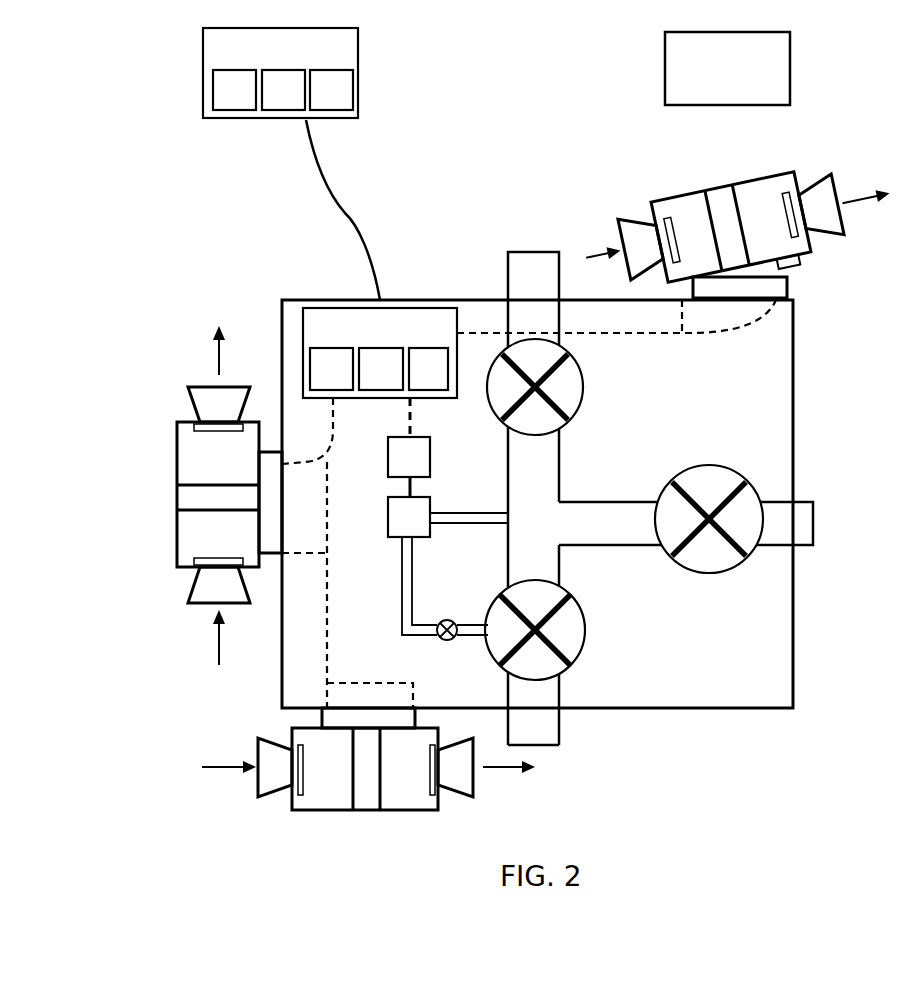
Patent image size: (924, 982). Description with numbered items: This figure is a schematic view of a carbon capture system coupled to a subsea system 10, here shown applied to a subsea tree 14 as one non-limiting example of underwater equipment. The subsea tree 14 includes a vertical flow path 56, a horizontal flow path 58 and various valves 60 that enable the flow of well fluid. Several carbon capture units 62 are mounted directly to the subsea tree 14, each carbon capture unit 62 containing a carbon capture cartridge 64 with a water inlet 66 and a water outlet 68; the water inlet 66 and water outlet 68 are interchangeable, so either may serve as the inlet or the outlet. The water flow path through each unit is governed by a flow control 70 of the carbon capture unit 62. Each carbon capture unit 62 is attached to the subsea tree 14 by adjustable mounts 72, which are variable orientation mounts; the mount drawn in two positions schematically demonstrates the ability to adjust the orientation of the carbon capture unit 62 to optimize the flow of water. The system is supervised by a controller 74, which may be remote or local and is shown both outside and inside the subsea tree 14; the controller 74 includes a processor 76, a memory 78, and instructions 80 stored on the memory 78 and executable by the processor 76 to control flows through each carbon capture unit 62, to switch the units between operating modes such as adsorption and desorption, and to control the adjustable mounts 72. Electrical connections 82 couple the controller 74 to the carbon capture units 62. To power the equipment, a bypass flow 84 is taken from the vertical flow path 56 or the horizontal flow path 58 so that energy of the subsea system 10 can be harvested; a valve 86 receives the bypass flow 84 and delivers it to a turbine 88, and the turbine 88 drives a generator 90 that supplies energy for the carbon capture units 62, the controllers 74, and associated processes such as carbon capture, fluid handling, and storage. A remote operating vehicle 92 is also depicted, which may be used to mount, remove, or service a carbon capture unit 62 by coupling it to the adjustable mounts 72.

The subsea system 10 is at (108, 162).
The subsea tree 14 is at (794, 420).
The vertical flow path 56 is at (530, 252).
The horizontal flow path 58 is at (813, 520).
The valves 60 is at (582, 370).
The carbon capture unit 62 is at (177, 449).
The carbon capture cartridge 64 is at (177, 497).
The water inlet 66 is at (191, 583).
The water outlet 68 is at (200, 386).
The flow control 70 is at (300, 782).
The adjustable mounts 72 is at (805, 276).
The controller 74 is at (203, 52).
The processor 76 is at (230, 110).
The memory 78 is at (280, 110).
The instructions 80 is at (330, 110).
The electrical connections 82 is at (326, 612).
The bypass flow 84 is at (402, 562).
The valve 86 is at (447, 643).
The turbine 88 is at (388, 511).
The generator 90 is at (388, 448).
The remote operating vehicle 92 is at (790, 60).